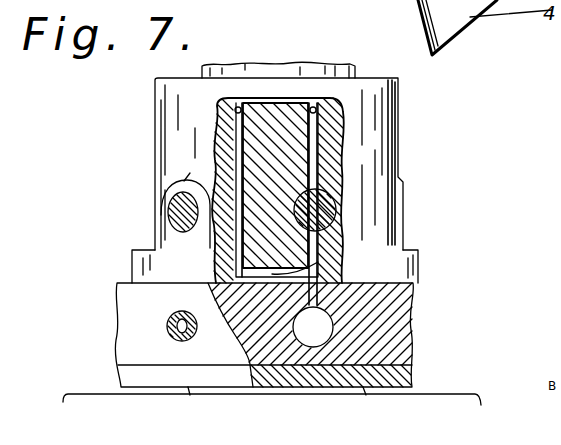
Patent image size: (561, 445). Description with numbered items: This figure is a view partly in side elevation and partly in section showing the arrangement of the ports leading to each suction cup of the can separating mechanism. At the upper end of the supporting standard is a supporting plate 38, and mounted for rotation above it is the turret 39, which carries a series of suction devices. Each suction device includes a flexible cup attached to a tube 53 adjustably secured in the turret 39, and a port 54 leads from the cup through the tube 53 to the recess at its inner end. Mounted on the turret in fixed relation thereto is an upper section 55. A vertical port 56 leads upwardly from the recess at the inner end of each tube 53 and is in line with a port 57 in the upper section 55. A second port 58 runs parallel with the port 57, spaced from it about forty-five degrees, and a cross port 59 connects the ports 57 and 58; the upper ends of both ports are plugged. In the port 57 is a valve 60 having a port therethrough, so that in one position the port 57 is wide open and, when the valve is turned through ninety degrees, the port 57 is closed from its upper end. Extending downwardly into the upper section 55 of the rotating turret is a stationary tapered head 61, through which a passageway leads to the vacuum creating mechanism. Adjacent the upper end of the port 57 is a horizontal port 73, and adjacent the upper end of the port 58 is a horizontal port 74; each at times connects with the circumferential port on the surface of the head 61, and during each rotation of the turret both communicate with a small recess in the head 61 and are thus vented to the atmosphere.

The supporting plate 38 is at (460, 382).
The turret 39 is at (395, 343).
The tube 53 is at (173, 312).
The port 54 is at (168, 332).
The upper section 55 is at (383, 138).
The vertical port 56 is at (315, 304).
The port 57 is at (318, 134).
The second port 58 is at (245, 158).
The cross port 59 is at (318, 262).
The valve 60 is at (180, 208).
The tapered head 61 is at (273, 75).
The horizontal port 73 is at (335, 102).
The horizontal port 74 is at (218, 110).